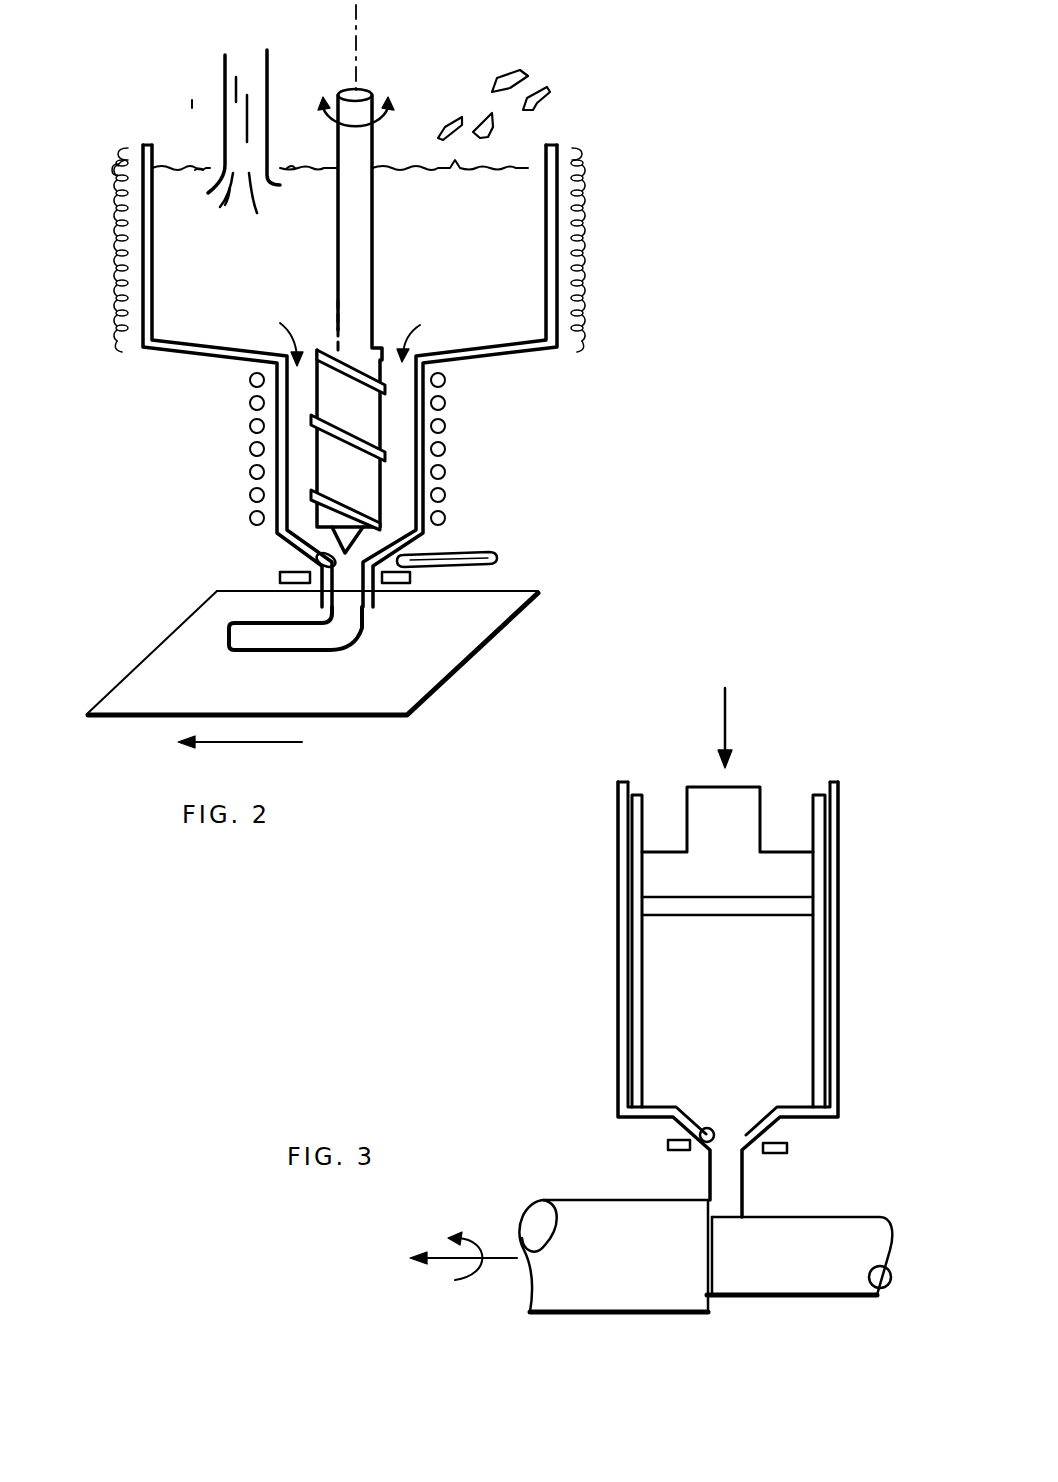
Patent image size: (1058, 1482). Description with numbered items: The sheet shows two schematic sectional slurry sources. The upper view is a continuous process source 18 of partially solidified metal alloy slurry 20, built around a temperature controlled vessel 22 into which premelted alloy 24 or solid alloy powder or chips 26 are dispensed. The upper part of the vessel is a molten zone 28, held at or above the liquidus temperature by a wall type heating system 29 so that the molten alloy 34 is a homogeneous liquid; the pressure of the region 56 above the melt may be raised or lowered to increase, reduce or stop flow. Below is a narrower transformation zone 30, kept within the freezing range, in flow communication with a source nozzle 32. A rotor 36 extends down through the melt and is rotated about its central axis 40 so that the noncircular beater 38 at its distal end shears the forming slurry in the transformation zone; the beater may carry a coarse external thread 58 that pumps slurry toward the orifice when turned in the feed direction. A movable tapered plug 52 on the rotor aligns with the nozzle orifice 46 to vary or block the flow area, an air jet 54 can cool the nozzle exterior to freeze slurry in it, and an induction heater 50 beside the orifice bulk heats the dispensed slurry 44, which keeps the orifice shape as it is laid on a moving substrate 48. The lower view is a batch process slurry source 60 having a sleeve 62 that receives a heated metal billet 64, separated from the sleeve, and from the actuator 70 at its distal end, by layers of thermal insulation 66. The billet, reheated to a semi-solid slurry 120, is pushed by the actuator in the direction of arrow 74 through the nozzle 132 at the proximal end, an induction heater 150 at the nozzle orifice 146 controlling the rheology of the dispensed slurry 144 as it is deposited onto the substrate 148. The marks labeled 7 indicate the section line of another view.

In FIG. 2, the continuous process source 18 is at (90, 284).
In FIG. 2, the partially solidified metal alloy slurry 20 is at (397, 483).
In FIG. 2, the temperature controlled vessel 22 is at (560, 140).
In FIG. 2, the premelted alloy 24 is at (225, 100).
In FIG. 2, the solid alloy powder or chips 26 is at (548, 100).
In FIG. 2, the molten zone 28 is at (527, 276).
In FIG. 2, the wall type heating system 29 is at (112, 183).
In FIG. 2, the transformation zone 30 is at (288, 418).
In FIG. 2, the source nozzle 32 is at (417, 547).
In FIG. 2, the molten alloy 34 is at (434, 248).
In FIG. 2, the rotor 36 is at (372, 153).
In FIG. 2, the beater 38 is at (383, 435).
In FIG. 2, the central axis 40 is at (360, 36).
In FIG. 2, the dispensed slurry 44 is at (352, 622).
In FIG. 2, the nozzle orifice 46 is at (303, 560).
In FIG. 2, the substrate 48 is at (435, 663).
In FIG. 2, the induction heater 50 is at (410, 578).
In FIG. 2, the movable tapered plug 52 is at (318, 534).
In FIG. 2, the air jet 54 is at (495, 550).
In FIG. 2, the region above the molten alloy 56 is at (438, 92).
In FIG. 2, the coarse external thread 58 is at (382, 370).
In FIG. 3, the batch process slurry source 60 is at (585, 874).
In FIG. 3, the sleeve 62 is at (848, 826).
In FIG. 3, the heated metal billet 64 is at (793, 993).
In FIG. 3, the thermal insulation 66 is at (800, 906).
In FIG. 3, the actuator 70 is at (760, 800).
In FIG. 3, the arrow 74 is at (727, 728).
In FIG. 3, the metal slurry 120 is at (752, 1089).
In FIG. 3, the nozzle 132 is at (775, 1130).
In FIG. 3, the dispensed slurry 144 is at (743, 1190).
In FIG. 3, the nozzle orifice 146 is at (690, 1130).
In FIG. 3, the substrate 148 is at (785, 1277).
In FIG. 3, the induction heater 150 is at (682, 1151).
In FIG. 3, the section line 7- 7 is at (590, 1163).